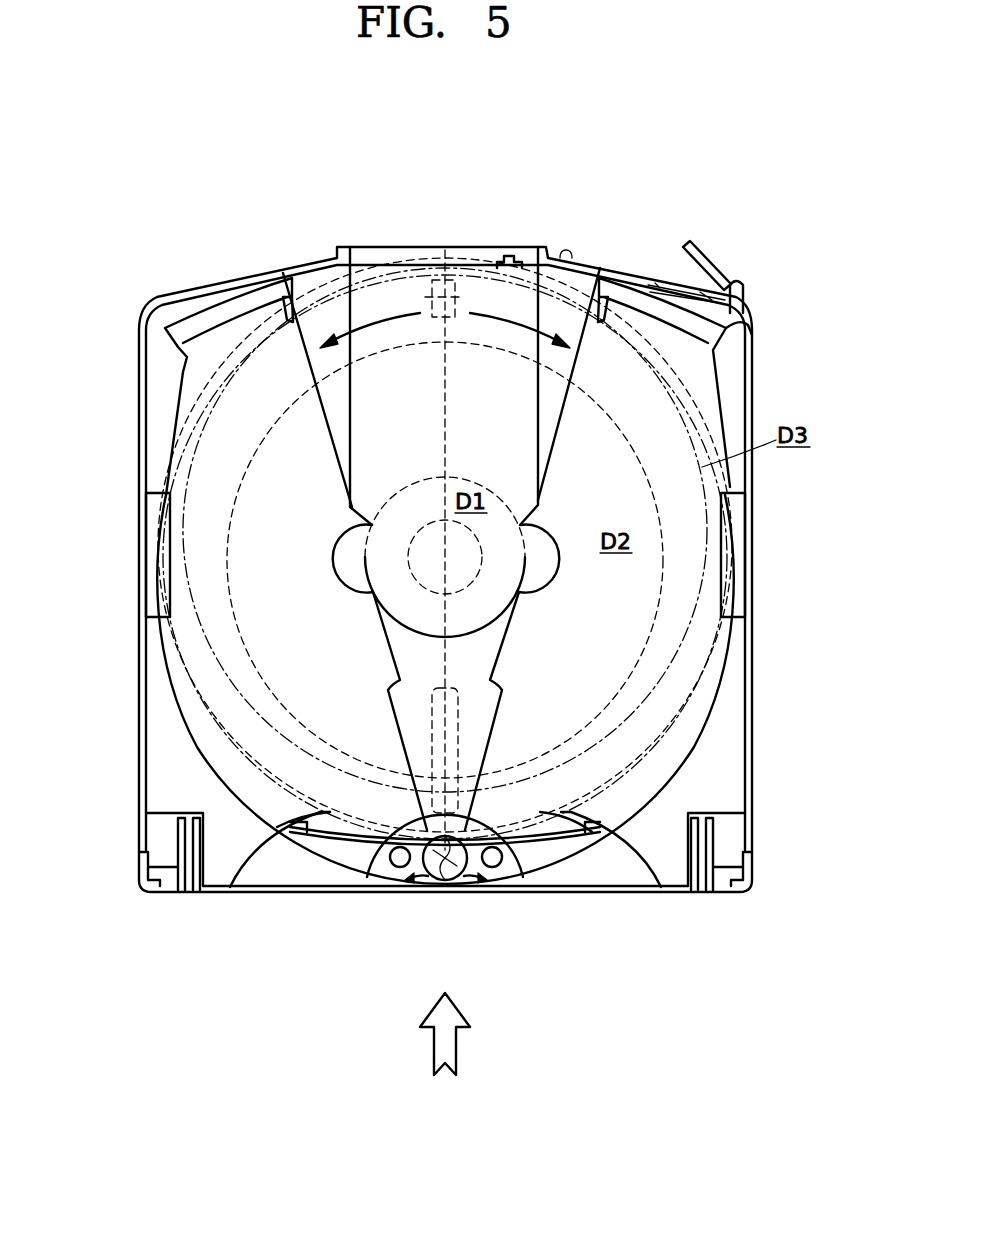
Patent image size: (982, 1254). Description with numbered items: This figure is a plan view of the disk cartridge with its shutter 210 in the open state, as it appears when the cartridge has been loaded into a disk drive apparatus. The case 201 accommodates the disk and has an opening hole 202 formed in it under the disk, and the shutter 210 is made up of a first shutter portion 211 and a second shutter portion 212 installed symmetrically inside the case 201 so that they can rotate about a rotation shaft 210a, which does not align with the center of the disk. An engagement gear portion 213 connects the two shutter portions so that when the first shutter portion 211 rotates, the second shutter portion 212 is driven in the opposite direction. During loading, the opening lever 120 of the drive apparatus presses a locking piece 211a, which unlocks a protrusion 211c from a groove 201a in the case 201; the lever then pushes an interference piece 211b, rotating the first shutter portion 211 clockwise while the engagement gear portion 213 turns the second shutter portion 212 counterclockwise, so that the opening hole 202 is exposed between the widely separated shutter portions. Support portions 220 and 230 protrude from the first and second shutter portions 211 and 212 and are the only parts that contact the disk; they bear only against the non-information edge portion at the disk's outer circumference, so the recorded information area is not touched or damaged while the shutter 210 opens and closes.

The opening lever 120 is at (708, 262).
The case 201 is at (138, 405).
The groove 201a is at (508, 254).
The opening hole 202 is at (418, 290).
The shutter 210 is at (445, 907).
The rotation shaft 210a is at (446, 899).
The first shutter portion 211 is at (380, 833).
The locking piece 211a is at (748, 324).
The interference piece 211b is at (745, 292).
The protrusion 211c is at (668, 290).
The second shutter portion 212 is at (317, 817).
The engagement gear portion 213 is at (445, 872).
The support portion 220 is at (237, 307).
The support portion 230 is at (277, 827).